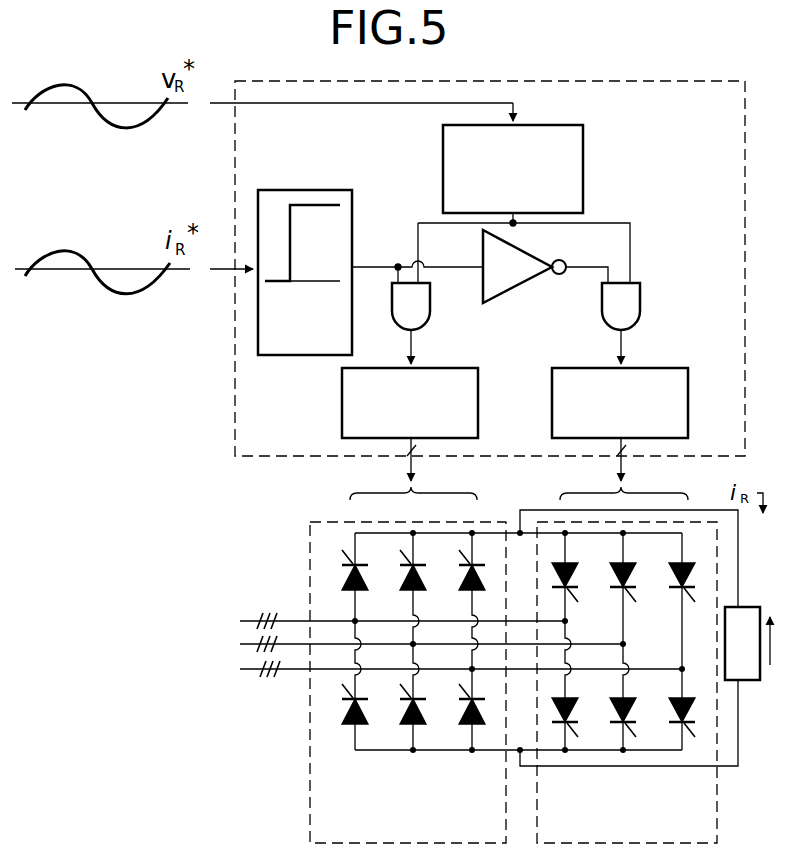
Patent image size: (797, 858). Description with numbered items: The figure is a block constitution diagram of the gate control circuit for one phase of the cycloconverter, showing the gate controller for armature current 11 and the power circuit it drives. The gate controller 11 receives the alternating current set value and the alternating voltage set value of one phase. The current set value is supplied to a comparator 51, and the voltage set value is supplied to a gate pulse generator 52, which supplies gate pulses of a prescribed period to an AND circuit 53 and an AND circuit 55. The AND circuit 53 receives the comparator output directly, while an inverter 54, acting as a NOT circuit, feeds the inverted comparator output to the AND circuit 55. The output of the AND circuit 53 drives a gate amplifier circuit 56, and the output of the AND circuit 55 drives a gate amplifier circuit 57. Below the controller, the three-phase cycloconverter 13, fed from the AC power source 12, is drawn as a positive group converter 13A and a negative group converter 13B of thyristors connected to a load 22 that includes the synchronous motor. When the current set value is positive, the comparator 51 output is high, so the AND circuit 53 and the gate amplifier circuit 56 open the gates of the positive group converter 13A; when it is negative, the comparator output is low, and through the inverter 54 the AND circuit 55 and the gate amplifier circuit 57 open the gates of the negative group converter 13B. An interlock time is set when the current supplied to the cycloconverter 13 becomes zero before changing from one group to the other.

The gate controller for armature current 11 is at (650, 81).
The AC power source 12 is at (248, 644).
The three-phase cycloconverter 13 is at (300, 552).
The positive group converter 13A is at (310, 752).
The negative group converter 13B is at (718, 808).
The load 22 is at (745, 681).
The comparator 51 is at (318, 190).
The gate pulse generator 52 is at (443, 160).
The AND circuit 53 is at (430, 320).
The inverter 54 is at (538, 276).
The AND circuit 55 is at (640, 312).
The gate amplifier circuit 56 is at (478, 408).
The gate amplifier circuit 57 is at (688, 410).